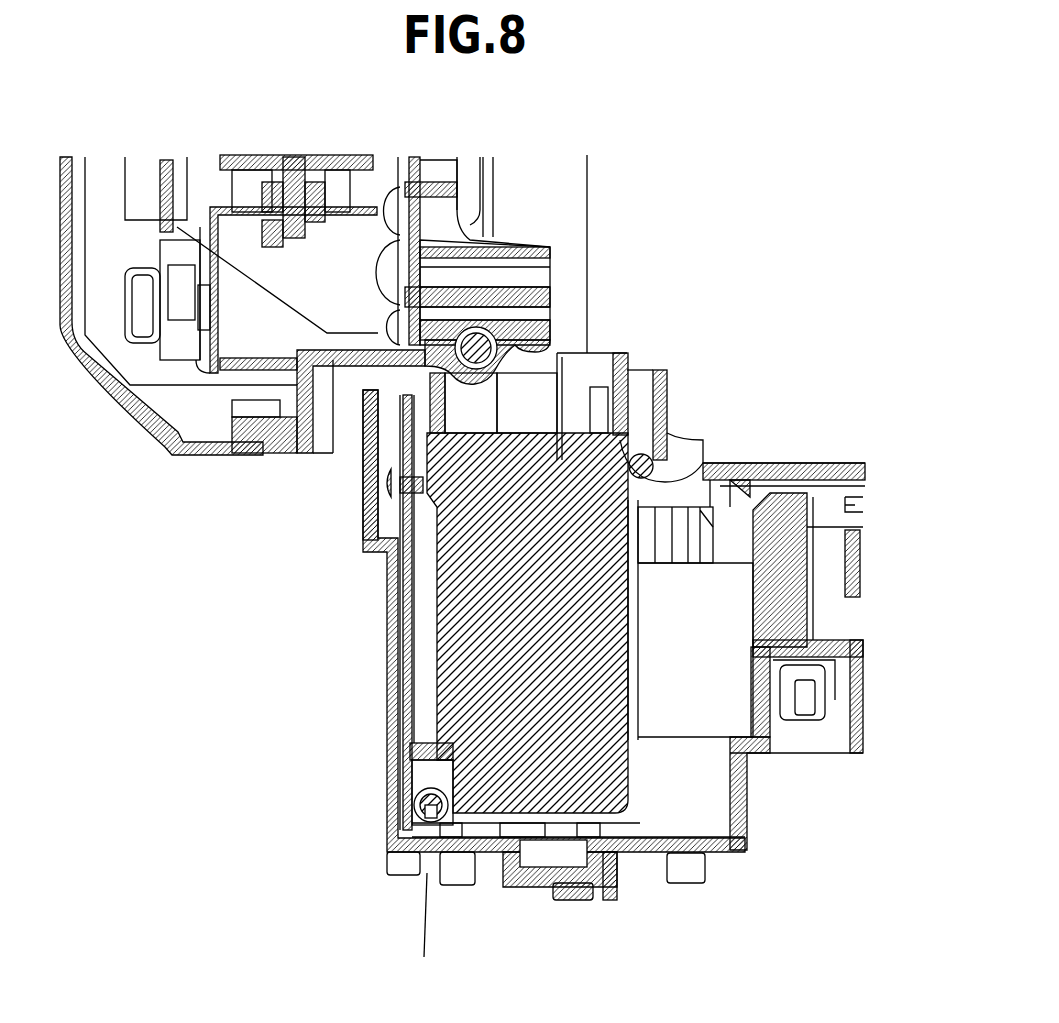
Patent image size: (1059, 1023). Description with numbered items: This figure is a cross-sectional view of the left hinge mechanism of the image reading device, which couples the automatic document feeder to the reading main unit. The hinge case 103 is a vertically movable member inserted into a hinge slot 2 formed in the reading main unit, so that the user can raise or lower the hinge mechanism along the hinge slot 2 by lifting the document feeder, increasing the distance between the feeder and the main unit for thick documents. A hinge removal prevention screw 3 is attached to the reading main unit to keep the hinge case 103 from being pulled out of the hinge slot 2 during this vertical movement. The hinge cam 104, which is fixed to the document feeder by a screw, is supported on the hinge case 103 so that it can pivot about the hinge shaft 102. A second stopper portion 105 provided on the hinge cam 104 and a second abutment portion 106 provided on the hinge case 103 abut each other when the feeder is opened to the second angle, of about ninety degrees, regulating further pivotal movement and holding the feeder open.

The hinge slot 2 is at (392, 775).
The hinge removal prevention screw 3 is at (385, 482).
The hinge shaft 102 is at (475, 338).
The hinge case 103 is at (453, 664).
The hinge cam 104 is at (483, 275).
The second stopper portion 105 is at (415, 367).
The second abutment portion 106 is at (388, 378).